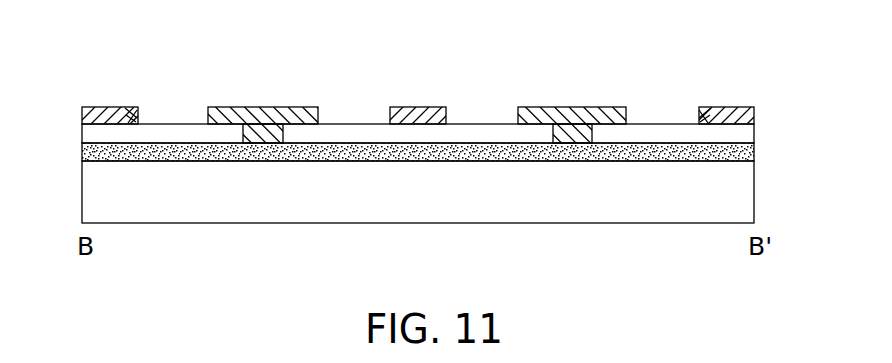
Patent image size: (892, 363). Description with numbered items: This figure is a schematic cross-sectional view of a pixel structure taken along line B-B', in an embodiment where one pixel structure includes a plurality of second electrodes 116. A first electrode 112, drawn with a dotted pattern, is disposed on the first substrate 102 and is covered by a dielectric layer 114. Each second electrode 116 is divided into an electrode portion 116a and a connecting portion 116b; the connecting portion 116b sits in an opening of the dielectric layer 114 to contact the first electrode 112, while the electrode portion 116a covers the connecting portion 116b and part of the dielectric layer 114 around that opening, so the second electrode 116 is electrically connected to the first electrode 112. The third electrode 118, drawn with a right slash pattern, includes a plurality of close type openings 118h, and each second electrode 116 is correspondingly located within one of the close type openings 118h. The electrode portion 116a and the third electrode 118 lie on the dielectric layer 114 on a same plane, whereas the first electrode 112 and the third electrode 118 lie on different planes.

The first substrate 102 is at (745, 191).
The first electrode 112 is at (742, 154).
The dielectric layer 114 is at (742, 135).
The second electrode 116 is at (417, 71).
The electrode portion 116a is at (235, 107).
The connecting portion 116b is at (264, 138).
The third electrode 118 is at (103, 107).
The close type opening 118h is at (118, 107).